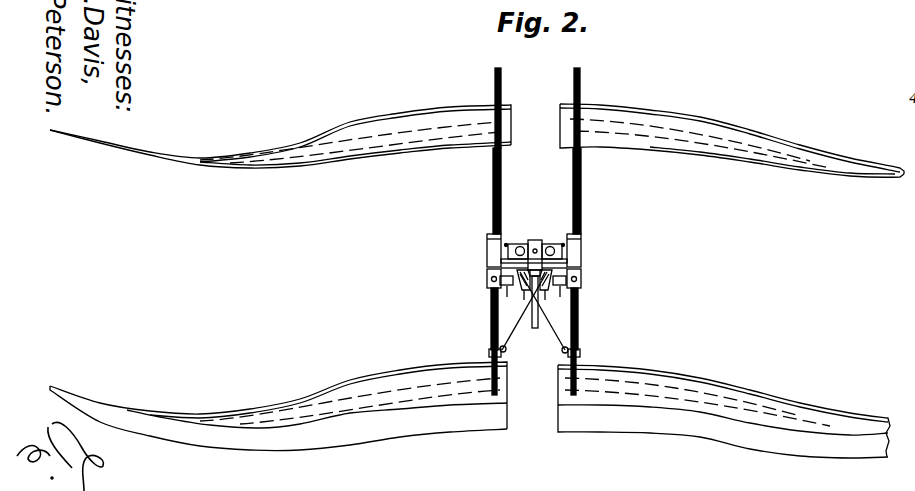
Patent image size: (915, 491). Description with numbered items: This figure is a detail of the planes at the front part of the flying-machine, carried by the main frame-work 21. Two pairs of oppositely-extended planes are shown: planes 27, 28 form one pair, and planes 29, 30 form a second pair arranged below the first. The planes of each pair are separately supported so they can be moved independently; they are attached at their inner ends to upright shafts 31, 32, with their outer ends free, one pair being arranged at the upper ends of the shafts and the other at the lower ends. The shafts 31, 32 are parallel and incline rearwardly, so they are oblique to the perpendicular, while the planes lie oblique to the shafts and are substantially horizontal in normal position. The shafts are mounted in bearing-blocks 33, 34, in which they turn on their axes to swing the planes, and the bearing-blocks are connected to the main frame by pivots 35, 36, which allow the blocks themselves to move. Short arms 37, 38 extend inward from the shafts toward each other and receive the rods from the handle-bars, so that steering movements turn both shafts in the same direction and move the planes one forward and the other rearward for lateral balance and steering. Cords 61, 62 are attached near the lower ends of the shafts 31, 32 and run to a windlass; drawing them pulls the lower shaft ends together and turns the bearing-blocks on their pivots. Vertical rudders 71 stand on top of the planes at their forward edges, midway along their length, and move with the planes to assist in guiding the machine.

The main frame-work 21 is at (534, 328).
The plane 27 is at (674, 119).
The plane 28 is at (407, 111).
The plane 29 is at (703, 383).
The plane 30 is at (388, 372).
The upright shaft 31 is at (581, 197).
The upright shaft 32 is at (501, 196).
The bearing-block 33 is at (582, 254).
The bearing-block 34 is at (490, 254).
The pivot 35 is at (551, 246).
The pivot 36 is at (520, 246).
The short arm 37 is at (553, 292).
The short arm 38 is at (515, 292).
The cord 61 is at (521, 330).
The cord 62 is at (552, 326).
The vertical rudder 71 is at (493, 75).